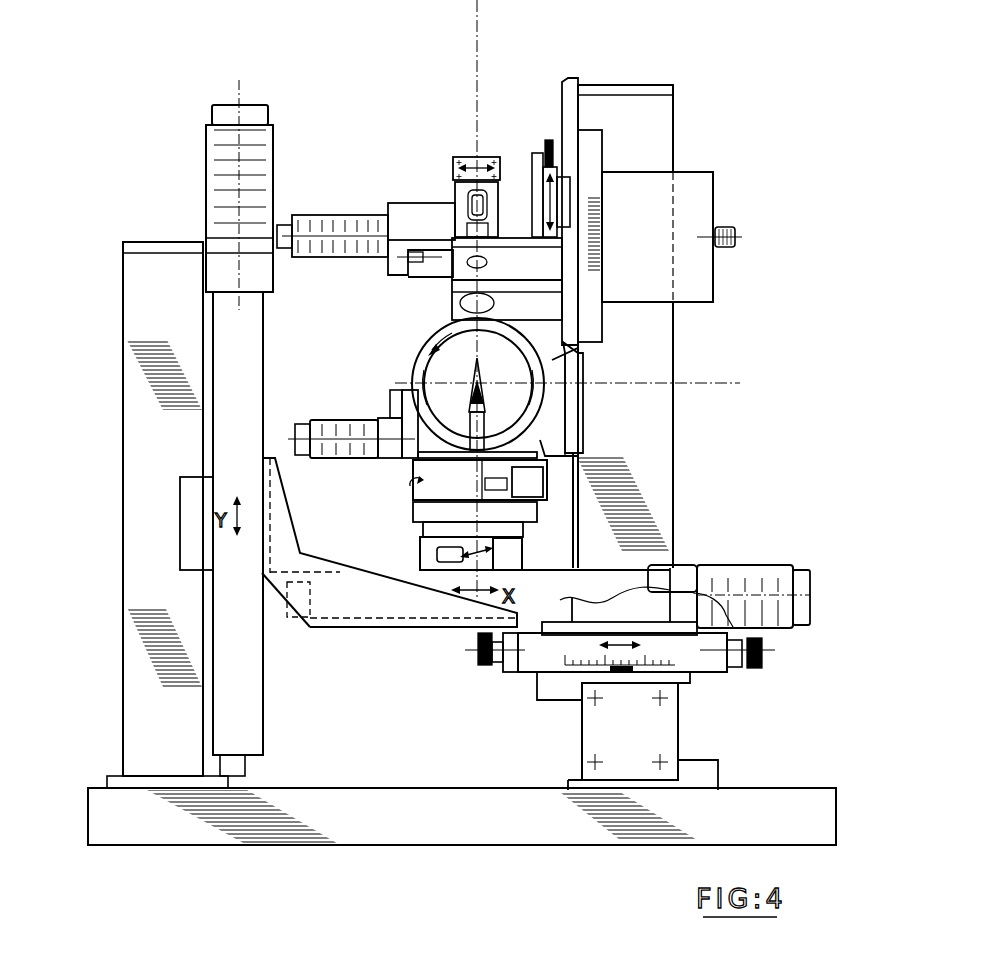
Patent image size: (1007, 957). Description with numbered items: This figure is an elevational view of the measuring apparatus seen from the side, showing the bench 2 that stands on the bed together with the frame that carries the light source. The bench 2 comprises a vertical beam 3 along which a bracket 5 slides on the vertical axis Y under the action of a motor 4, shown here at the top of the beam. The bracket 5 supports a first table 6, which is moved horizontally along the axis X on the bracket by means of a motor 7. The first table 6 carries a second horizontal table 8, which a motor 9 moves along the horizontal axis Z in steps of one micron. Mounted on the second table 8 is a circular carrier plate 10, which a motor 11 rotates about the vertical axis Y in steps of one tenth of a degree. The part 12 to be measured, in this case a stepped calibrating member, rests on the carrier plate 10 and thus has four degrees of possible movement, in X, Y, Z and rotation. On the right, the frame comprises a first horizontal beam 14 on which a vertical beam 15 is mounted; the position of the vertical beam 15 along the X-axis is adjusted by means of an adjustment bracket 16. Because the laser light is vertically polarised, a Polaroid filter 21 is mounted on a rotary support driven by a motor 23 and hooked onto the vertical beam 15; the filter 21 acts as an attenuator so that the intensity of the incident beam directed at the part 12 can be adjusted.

The bench 2 is at (752, 418).
The vertical beam 3 is at (245, 330).
The motor 4 is at (224, 168).
The bracket 5 is at (282, 604).
The first table 6 is at (435, 585).
The motor 7 is at (768, 575).
The second horizontal table 8 is at (428, 552).
The motor 9 is at (512, 552).
The circular carrier plate 10 is at (432, 472).
The motor 11 is at (533, 482).
The part to be measured 12 is at (468, 413).
The first horizontal beam 14 is at (660, 732).
The vertical beam 15 is at (652, 347).
The adjustment bracket 16 is at (538, 665).
The Polaroid filter 21 is at (460, 365).
The motor 23 is at (345, 432).